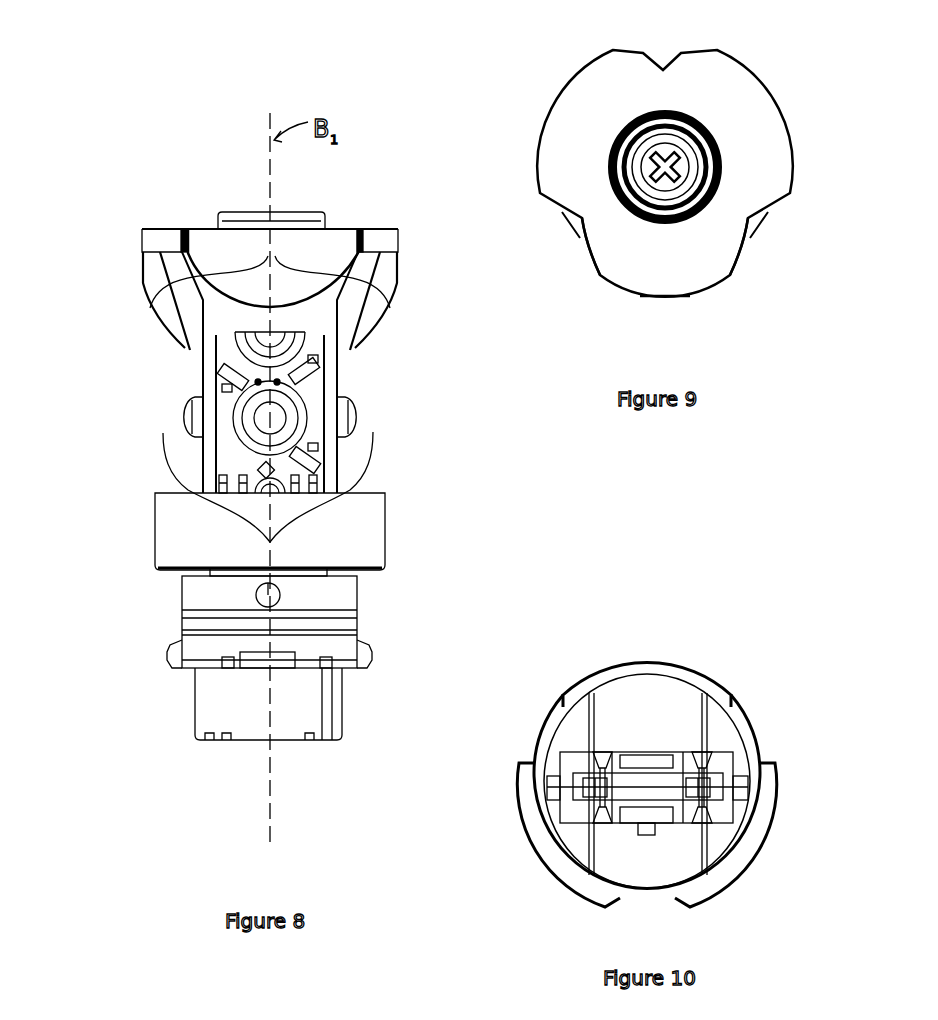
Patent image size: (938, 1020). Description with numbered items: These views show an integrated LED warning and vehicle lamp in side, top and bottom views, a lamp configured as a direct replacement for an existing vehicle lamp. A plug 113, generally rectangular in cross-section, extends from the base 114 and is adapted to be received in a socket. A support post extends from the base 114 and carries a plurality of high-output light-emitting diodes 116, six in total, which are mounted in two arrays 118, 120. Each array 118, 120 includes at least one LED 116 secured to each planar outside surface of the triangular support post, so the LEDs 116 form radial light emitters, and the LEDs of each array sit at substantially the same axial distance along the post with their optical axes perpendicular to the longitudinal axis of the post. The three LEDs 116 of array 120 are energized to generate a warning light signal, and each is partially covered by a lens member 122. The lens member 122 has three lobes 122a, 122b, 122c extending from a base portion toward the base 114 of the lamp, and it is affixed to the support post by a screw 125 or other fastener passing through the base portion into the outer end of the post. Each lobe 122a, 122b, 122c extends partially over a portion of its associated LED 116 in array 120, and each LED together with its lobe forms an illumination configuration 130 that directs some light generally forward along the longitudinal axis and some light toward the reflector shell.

In FIG. 8, the plug 113 is at (315, 688).
In FIG. 10, the plug 113 is at (655, 790).
In FIG. 8, the base 114 is at (375, 547).
In FIG. 8, the light-emitting diodes 116 is at (190, 347).
In FIG. 8, the array 118 is at (268, 498).
In FIG. 8, the array 120 is at (270, 270).
In FIG. 8, the lens member 122 is at (255, 331).
In FIG. 9, the lens member 122 is at (661, 184).
In FIG. 8, the lobe 122a is at (318, 250).
In FIG. 9, the lobe 122a is at (695, 297).
In FIG. 10, the lobe 122a is at (680, 668).
In FIG. 8, the lobe 122b is at (400, 266).
In FIG. 9, the lobe 122b is at (790, 140).
In FIG. 10, the lobe 122b is at (760, 838).
In FIG. 8, the lobe 122c is at (150, 277).
In FIG. 9, the lobe 122c is at (545, 112).
In FIG. 10, the lobe 122c is at (540, 850).
In FIG. 8, the screw 125 is at (300, 222).
In FIG. 9, the screw 125 is at (670, 148).
In FIG. 8, the illumination configuration 130 is at (409, 308).